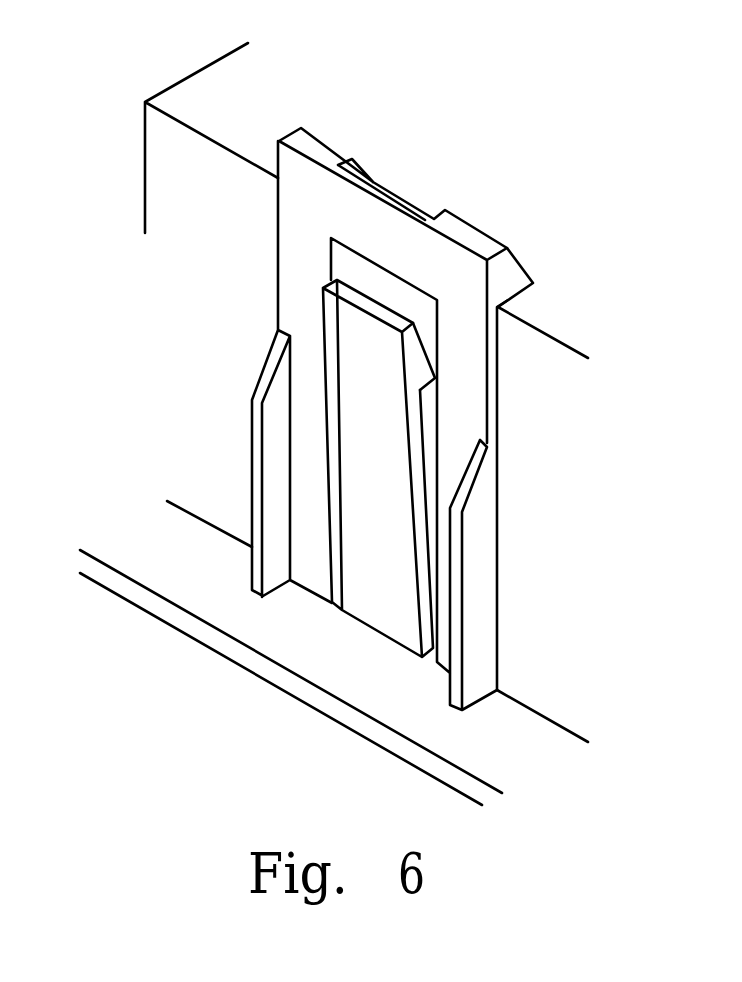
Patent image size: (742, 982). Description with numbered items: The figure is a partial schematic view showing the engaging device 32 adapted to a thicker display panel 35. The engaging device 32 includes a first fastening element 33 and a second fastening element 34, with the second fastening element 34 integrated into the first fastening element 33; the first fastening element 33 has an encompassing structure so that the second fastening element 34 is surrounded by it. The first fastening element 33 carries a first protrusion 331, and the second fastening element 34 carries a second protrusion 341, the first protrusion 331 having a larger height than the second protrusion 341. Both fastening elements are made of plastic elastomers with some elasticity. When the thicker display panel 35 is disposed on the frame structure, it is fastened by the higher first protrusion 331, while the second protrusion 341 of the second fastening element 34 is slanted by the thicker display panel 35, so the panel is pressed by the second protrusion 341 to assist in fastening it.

The engaging device 32 is at (397, 185).
The first fastening element 33 is at (297, 243).
The first protrusion 331 is at (508, 272).
The second fastening element 34 is at (370, 493).
The second protrusion 341 is at (417, 362).
The thicker display panel 35 is at (212, 100).